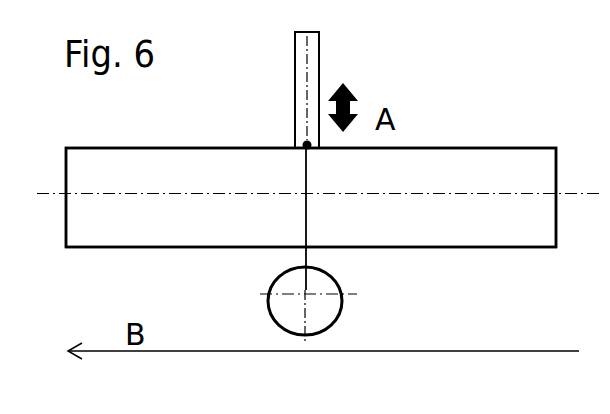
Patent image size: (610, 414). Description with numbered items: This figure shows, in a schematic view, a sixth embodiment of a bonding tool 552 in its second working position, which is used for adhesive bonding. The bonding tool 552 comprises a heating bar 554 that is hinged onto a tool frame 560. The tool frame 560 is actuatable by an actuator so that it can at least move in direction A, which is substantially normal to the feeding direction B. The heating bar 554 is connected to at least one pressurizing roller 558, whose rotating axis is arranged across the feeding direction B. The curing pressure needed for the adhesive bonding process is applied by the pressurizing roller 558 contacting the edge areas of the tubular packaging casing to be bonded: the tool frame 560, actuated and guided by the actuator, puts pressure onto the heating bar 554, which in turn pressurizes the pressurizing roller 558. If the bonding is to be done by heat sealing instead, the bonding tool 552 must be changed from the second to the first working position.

The bonding tool 552 is at (447, 115).
The heating bar 554 is at (398, 232).
The pressurizing roller 558 is at (297, 317).
The tool frame 560 is at (312, 63).